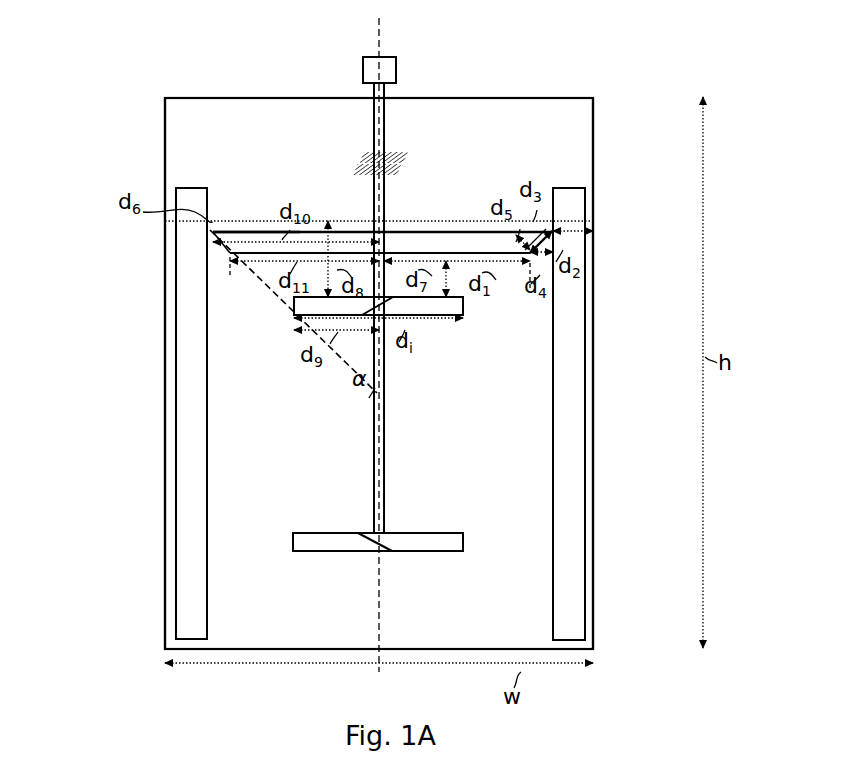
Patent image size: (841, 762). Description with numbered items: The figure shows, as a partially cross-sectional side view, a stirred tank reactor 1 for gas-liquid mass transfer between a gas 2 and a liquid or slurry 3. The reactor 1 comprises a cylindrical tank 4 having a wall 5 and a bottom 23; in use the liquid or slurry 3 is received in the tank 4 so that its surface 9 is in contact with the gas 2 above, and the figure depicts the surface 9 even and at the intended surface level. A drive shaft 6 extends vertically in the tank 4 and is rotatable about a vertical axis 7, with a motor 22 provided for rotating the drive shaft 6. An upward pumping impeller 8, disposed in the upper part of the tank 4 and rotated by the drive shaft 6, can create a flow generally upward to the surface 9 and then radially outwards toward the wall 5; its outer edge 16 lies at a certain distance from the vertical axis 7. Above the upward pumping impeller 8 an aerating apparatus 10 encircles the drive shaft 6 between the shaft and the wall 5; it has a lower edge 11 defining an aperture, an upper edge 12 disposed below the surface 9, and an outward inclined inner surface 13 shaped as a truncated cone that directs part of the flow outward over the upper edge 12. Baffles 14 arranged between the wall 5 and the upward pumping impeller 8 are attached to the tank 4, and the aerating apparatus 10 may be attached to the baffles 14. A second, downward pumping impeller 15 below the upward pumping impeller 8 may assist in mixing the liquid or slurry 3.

The reactor 1 is at (116, 55).
The gas 2 is at (441, 141).
The liquid or slurry 3 is at (498, 444).
The tank 4 is at (165, 125).
The wall 5 is at (165, 366).
The drive shaft 6 is at (373, 118).
The vertical axis 7 is at (381, 38).
The upward pumping impeller 8 is at (464, 318).
The surface 9 is at (462, 218).
The aerating apparatus 10 is at (470, 231).
The lower edge 11 is at (226, 254).
The upper edge 12 is at (213, 232).
The inner surface 13 is at (215, 231).
The baffles 14 is at (186, 475).
The second impeller 15 is at (464, 540).
The outer edge 16 is at (290, 312).
The motor 22 is at (362, 70).
The bottom 23 is at (228, 650).